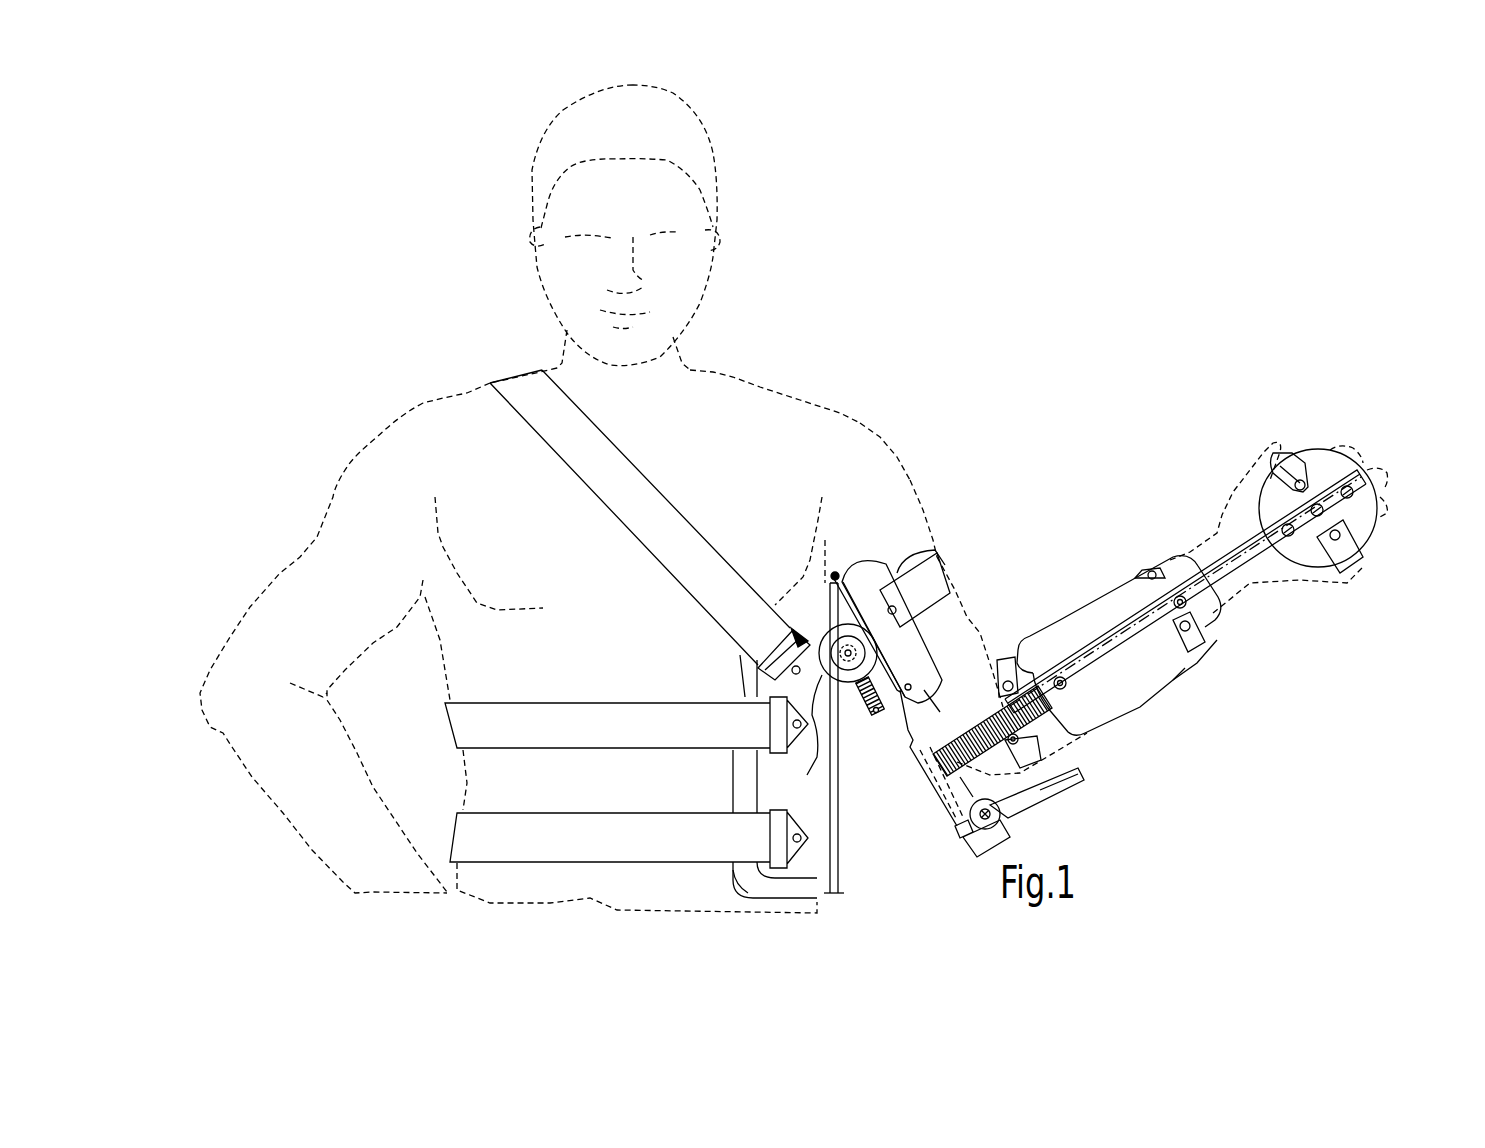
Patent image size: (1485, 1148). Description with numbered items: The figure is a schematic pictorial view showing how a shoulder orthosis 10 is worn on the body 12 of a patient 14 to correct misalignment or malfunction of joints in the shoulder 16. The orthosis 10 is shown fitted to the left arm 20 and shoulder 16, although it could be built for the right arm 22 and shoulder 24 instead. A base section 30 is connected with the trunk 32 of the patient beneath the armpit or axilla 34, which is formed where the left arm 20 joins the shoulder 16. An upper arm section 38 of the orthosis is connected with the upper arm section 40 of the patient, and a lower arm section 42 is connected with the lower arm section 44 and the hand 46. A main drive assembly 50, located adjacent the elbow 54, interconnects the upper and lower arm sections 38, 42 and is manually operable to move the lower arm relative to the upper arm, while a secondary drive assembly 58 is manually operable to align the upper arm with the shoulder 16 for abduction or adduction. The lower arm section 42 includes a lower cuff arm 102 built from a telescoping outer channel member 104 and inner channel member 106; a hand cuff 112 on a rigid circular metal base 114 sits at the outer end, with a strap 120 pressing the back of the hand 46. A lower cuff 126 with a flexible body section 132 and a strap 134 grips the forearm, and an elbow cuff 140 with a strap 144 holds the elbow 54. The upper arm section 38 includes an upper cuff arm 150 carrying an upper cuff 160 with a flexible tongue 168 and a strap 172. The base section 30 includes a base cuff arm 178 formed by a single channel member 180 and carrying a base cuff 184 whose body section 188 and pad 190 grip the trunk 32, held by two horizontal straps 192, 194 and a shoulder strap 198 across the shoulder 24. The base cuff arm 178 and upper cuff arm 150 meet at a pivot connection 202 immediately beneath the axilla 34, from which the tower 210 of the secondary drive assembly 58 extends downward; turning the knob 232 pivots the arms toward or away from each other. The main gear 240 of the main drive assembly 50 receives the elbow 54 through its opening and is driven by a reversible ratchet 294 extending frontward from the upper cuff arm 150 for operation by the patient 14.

The shoulder orthosis 10 is at (1040, 412).
The body 12 is at (718, 367).
The patient 14 is at (747, 157).
The shoulder 16 is at (813, 427).
The left arm 20 is at (980, 607).
The right arm 22 is at (320, 597).
The shoulder 24 is at (470, 413).
The base section 30 is at (730, 802).
The trunk 32 is at (463, 633).
The axilla 34 is at (830, 560).
The upper arm section 38 is at (973, 857).
The upper arm section 40 is at (903, 507).
The lower arm section 42 is at (1178, 657).
The lower arm section 44 is at (1253, 583).
The hand 46 is at (1367, 467).
The main drive assembly 50 is at (925, 772).
The elbow 54 is at (1073, 783).
The secondary drive assembly 58 is at (881, 726).
The lower cuff arm 102 is at (1150, 643).
The outer channel member 104 is at (1260, 557).
The inner channel member 106 is at (1097, 650).
The hand cuff 112 is at (1310, 447).
The base 114 is at (1360, 517).
The strap 120 is at (1353, 520).
The lower cuff 126 is at (1110, 593).
The body section 132 is at (1110, 697).
The strap 134 is at (1197, 630).
The elbow cuff 140 is at (1040, 727).
The strap 144 is at (1010, 677).
The upper cuff arm 150 is at (930, 707).
The upper cuff 160 is at (875, 558).
The tongue 168 is at (930, 553).
The strap 172 is at (960, 570).
The base cuff arm 178 is at (839, 897).
The channel member 180 is at (840, 847).
The base cuff 184 is at (737, 890).
The body section 188 is at (757, 683).
The pad 190 is at (747, 763).
The strap 192 is at (572, 727).
The strap 194 is at (557, 840).
The shoulder strap 198 is at (597, 468).
The pivot connection 202 is at (832, 575).
The tower 210 is at (790, 627).
The knob 232 is at (820, 757).
The main gear 240 is at (960, 790).
The reversible ratchet 294 is at (1037, 793).